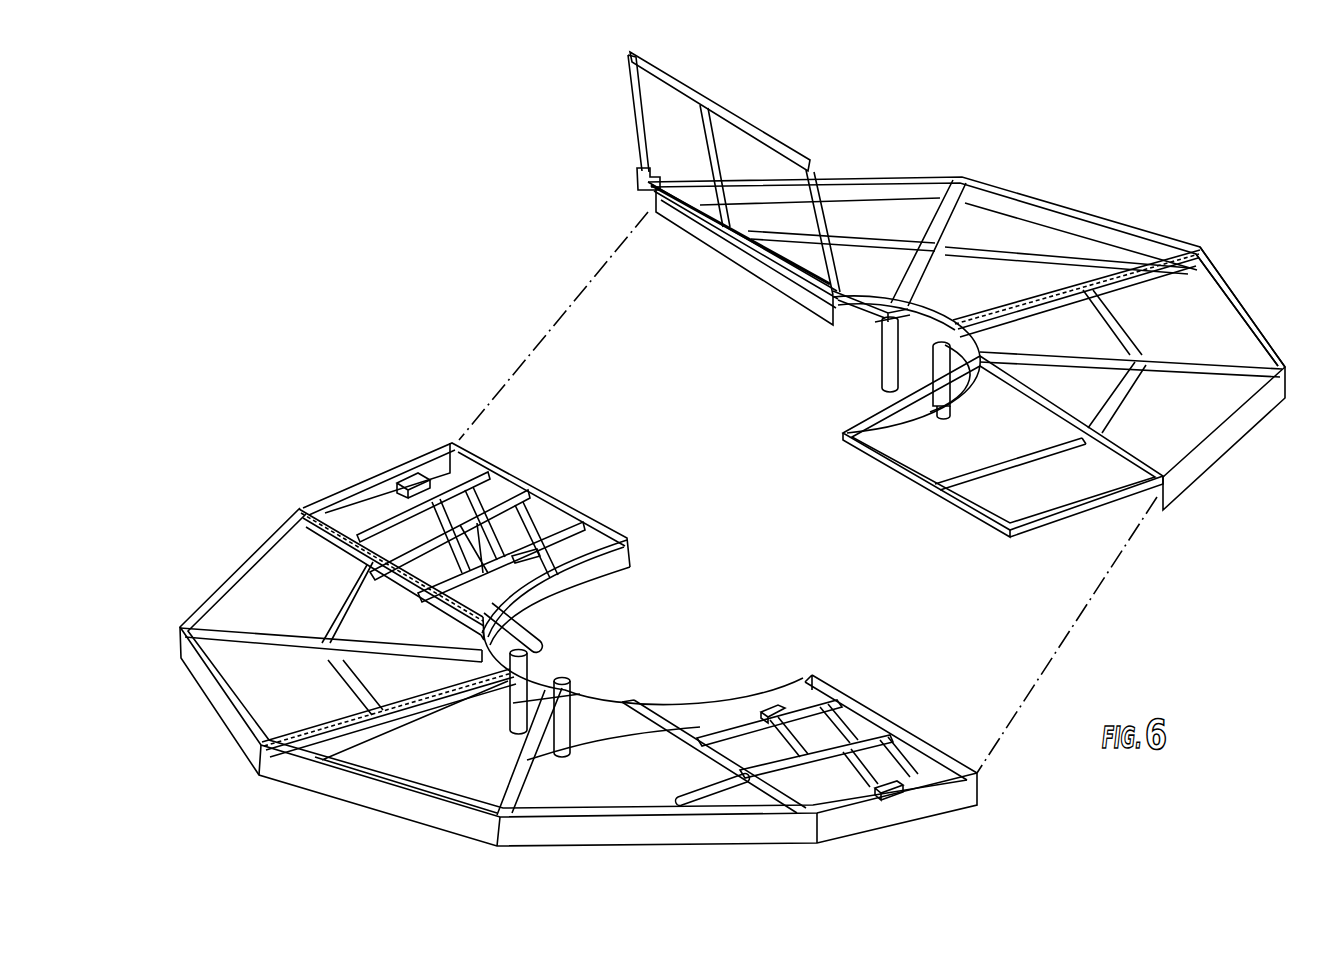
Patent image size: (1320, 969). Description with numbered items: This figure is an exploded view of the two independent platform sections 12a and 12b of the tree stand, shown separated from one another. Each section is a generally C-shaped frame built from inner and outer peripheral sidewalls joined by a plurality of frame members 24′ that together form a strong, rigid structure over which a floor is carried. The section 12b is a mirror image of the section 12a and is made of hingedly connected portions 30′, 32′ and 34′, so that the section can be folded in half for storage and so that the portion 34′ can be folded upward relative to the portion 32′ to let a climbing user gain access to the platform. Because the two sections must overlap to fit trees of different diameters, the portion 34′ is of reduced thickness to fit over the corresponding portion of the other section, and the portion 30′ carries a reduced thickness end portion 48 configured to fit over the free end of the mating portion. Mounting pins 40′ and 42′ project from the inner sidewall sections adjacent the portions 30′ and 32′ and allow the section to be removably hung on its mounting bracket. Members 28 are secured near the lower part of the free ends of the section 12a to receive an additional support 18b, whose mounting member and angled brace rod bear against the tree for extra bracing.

The platform section 12a is at (297, 500).
The platform section 12b is at (1064, 178).
The additional support 18b is at (896, 793).
The frame member 24′ is at (853, 233).
The member 28 is at (758, 728).
The portion 30′ is at (1248, 312).
The portion 32′ is at (958, 182).
The portion 34′ is at (630, 112).
The mounting pin 40′ is at (880, 358).
The mounting pin 42′ is at (933, 402).
The reduced thickness end portion 48 is at (1058, 518).